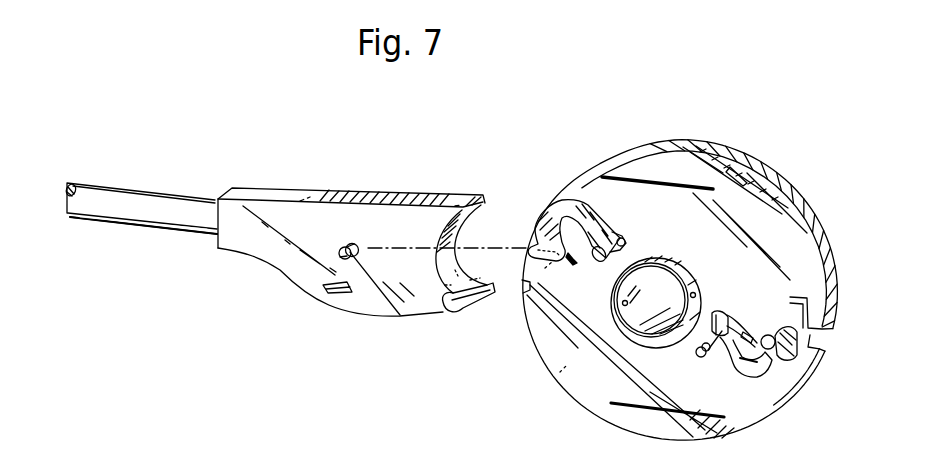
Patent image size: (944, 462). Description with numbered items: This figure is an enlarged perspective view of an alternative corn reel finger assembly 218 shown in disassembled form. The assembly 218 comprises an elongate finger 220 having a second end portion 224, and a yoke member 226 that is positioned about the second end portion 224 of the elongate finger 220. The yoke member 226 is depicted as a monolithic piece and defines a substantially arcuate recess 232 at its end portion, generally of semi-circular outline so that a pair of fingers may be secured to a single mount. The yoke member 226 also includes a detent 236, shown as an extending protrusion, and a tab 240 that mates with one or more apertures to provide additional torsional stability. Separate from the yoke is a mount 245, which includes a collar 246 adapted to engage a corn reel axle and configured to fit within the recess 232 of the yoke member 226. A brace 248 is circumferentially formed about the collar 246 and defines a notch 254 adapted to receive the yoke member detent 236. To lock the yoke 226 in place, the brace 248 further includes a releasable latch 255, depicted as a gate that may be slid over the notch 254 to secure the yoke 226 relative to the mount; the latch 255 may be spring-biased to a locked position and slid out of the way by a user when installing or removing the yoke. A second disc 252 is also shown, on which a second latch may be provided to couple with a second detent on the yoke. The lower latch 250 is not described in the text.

The corn reel finger assembly 218 is at (473, 184).
The elongate finger 220 is at (137, 191).
The second end portion 224 is at (283, 186).
The yoke member 226 is at (283, 280).
The arcuate recess 232 is at (450, 294).
The detent 236 is at (357, 222).
The tab 240 is at (343, 297).
The mount 245 is at (777, 110).
The collar 246 is at (623, 330).
The brace 248 is at (848, 289).
The lower latch 250 is at (748, 404).
The second disc 252 is at (808, 360).
The notch 254 is at (536, 243).
The releasable latch 255 is at (612, 218).